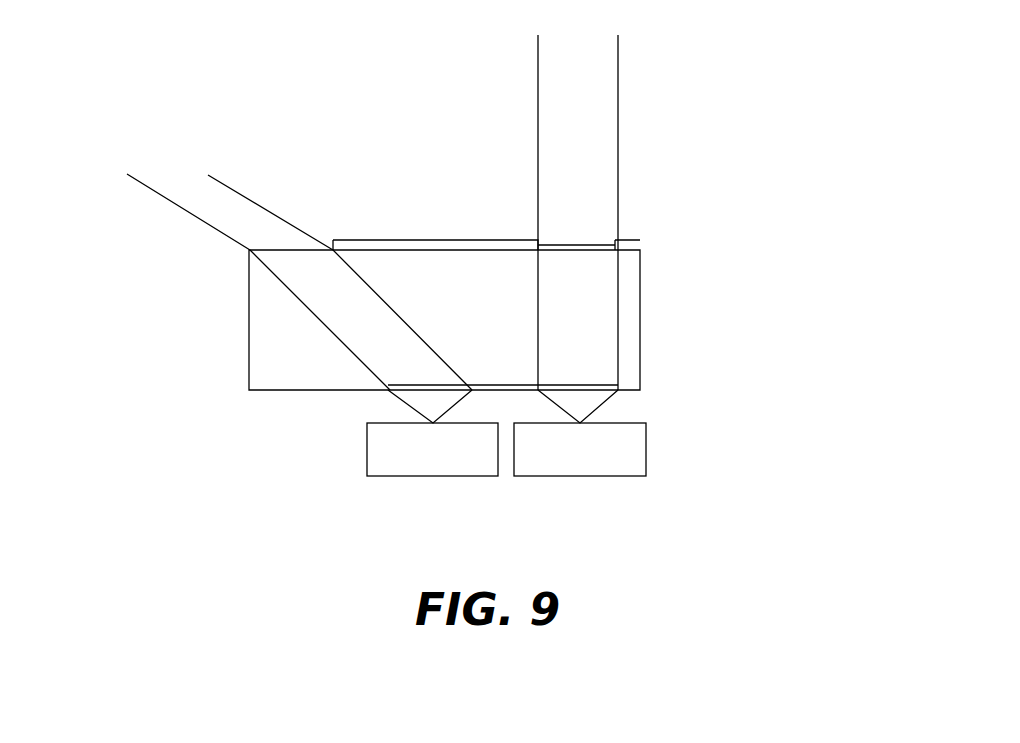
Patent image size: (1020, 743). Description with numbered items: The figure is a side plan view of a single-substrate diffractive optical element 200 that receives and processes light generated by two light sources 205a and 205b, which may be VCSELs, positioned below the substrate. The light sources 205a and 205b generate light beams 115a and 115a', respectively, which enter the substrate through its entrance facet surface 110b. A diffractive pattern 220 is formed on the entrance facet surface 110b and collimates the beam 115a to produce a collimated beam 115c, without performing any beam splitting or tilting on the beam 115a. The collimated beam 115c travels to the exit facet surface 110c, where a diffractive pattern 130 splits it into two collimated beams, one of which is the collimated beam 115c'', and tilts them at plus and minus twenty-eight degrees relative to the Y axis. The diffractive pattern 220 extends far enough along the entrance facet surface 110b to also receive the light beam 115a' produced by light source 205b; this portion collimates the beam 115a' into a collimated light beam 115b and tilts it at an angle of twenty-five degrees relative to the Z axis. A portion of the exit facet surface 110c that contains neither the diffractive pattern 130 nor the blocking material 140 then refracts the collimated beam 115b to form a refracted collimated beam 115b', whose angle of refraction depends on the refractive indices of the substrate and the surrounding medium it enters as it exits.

The single-substrate diffractive optical element 200 is at (455, 106).
The entrance facet surface 110b is at (277, 390).
The exit facet surface 110c is at (462, 250).
The blocking material 140 is at (443, 240).
The diffractive pattern 130 is at (587, 243).
The diffractive pattern 220 is at (597, 385).
The collimated beam 115c'' is at (674, 166).
The collimated beam 115c is at (669, 269).
The refracted collimated beam 115b' is at (197, 212).
The collimated light beam 115b is at (326, 320).
The light beam 115a' is at (392, 406).
The light beam 115a is at (543, 406).
The light source 205b is at (432, 449).
The light source 205a is at (580, 449).